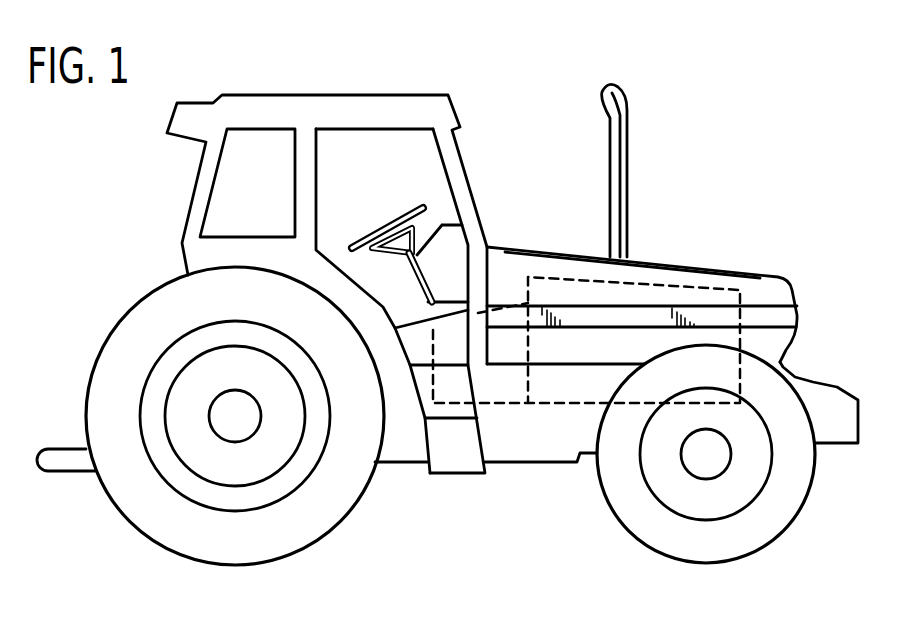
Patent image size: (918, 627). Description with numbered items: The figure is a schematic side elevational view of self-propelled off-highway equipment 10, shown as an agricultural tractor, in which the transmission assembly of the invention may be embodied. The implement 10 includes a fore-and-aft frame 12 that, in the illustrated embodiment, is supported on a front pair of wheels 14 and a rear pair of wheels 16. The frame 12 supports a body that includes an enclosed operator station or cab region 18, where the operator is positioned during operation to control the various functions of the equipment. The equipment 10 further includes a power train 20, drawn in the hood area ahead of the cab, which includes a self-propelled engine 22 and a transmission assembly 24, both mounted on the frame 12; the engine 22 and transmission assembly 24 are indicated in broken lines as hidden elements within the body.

The off-highway equipment 10 is at (724, 114).
The fore-and-aft frame 12 is at (547, 452).
The front pair of wheels 14 is at (770, 527).
The rear pair of wheels 16 is at (328, 508).
The cab region 18 is at (420, 172).
The power train 20 is at (635, 269).
The engine 22 is at (692, 289).
The transmission assembly 24 is at (452, 390).